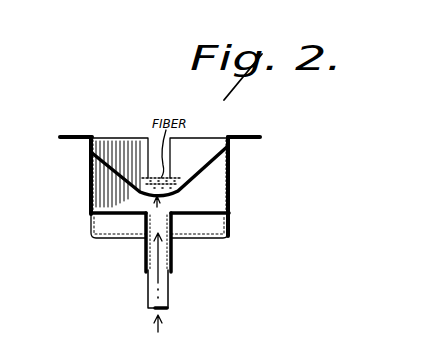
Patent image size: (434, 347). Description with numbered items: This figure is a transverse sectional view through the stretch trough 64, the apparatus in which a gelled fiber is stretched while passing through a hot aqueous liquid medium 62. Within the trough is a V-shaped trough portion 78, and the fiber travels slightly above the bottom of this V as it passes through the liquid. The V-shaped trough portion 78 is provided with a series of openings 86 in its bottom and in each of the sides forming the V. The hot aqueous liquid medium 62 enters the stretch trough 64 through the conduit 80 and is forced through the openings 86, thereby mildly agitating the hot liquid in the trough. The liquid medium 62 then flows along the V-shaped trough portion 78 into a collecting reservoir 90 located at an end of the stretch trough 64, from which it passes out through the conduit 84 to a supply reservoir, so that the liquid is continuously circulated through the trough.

The stretch trough 64 is at (237, 174).
The V-shaped trough portion 78 is at (110, 162).
The hot aqueous liquid medium 62 is at (177, 185).
The openings 86 is at (140, 191).
The collecting reservoir 90 is at (232, 237).
The conduit 80 is at (172, 258).
The conduit 84 is at (270, 300).